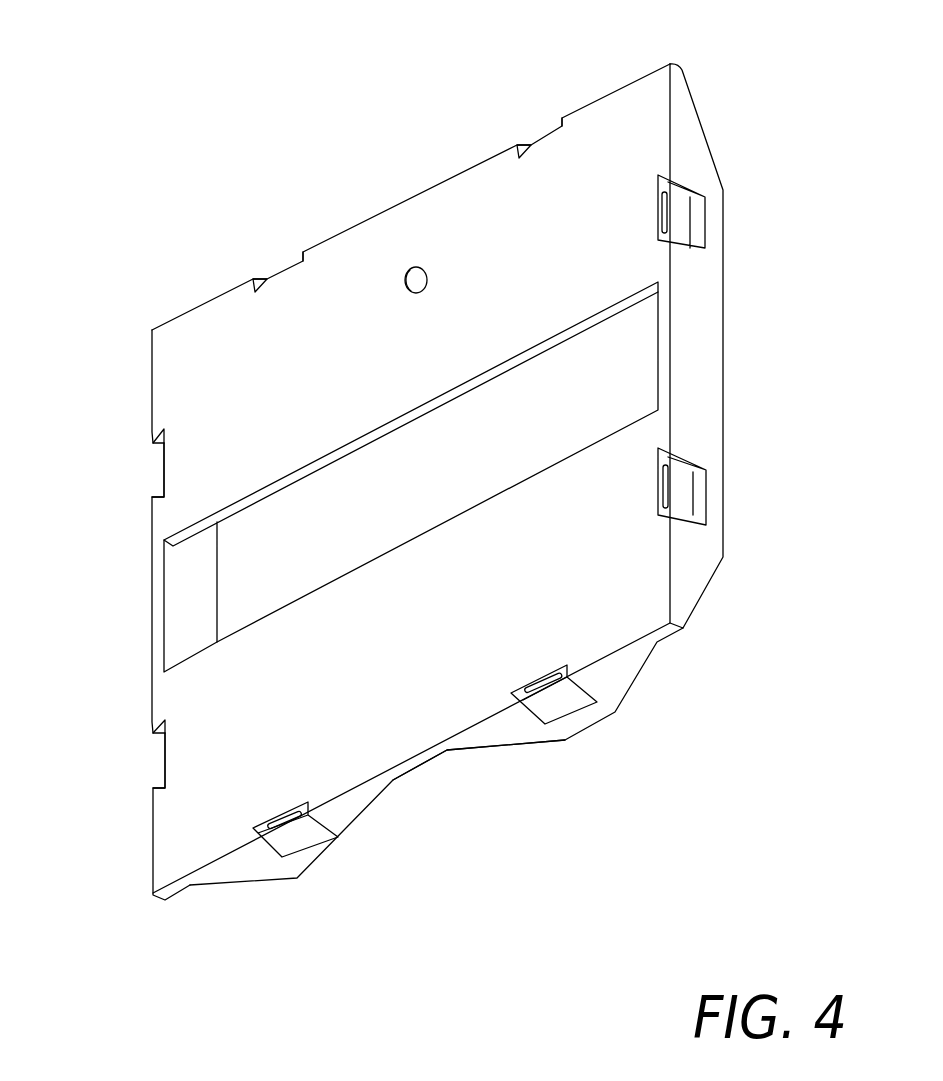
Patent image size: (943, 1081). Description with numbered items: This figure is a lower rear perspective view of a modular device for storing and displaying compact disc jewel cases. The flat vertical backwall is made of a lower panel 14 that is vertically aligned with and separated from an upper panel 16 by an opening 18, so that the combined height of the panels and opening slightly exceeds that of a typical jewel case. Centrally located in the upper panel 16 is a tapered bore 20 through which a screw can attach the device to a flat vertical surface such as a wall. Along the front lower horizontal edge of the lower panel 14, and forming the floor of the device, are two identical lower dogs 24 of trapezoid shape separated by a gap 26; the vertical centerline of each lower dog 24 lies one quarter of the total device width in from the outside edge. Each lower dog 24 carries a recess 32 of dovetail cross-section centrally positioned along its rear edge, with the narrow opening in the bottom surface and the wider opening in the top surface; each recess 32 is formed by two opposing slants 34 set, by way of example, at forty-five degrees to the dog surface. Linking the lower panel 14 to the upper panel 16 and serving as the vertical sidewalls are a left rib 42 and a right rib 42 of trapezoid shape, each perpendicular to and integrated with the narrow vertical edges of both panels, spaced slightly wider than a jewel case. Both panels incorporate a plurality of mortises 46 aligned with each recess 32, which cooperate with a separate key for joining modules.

The lower panel 14 is at (167, 865).
The upper panel 16 is at (178, 334).
The opening 18 is at (638, 390).
The tapered bore 20 is at (408, 272).
The lower dog 24 is at (363, 807).
The gap 26 is at (445, 782).
The recess 32 is at (547, 126).
The slant 34 is at (521, 142).
The rib 42 is at (187, 617).
The mortise 46 is at (275, 828).